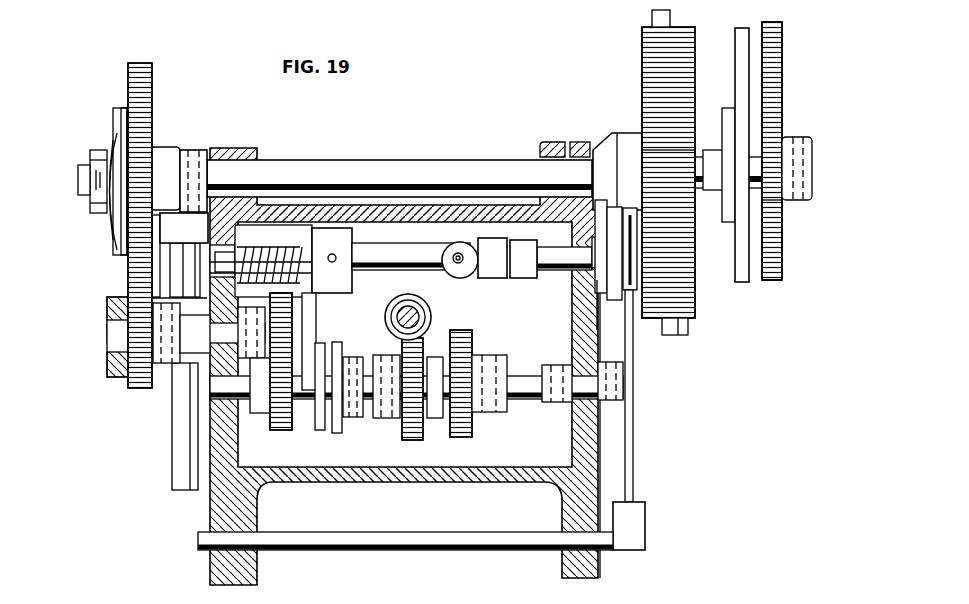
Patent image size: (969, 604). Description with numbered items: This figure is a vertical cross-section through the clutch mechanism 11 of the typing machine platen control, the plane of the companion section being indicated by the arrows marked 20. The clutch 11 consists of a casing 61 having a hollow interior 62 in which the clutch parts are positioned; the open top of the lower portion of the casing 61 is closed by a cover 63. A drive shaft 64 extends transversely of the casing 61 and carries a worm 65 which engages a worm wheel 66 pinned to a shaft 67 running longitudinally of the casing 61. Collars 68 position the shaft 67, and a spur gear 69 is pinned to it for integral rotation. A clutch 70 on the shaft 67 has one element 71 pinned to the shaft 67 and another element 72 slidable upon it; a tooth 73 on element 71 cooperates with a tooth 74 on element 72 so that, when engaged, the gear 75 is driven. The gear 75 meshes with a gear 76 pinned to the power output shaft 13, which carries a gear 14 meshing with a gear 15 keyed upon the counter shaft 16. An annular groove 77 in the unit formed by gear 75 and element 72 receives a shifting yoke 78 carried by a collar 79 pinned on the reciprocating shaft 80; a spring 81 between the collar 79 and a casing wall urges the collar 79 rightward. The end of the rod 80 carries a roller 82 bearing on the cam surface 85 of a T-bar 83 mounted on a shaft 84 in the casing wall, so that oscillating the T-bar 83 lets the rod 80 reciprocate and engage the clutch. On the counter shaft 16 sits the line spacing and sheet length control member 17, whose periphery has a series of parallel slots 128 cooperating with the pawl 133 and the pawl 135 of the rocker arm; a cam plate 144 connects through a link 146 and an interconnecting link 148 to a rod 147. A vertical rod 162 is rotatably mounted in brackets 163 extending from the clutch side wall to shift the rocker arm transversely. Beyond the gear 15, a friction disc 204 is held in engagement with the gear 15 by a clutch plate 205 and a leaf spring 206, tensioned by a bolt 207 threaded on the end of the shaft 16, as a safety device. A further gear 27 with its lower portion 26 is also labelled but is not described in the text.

The friction disc 204 is at (124, 108).
The clutch plate 205 is at (115, 112).
The leaf spring 206 is at (110, 137).
The bolt 207 is at (100, 213).
The gear 15 is at (140, 122).
The counter shaft 16 is at (342, 168).
The cover 63 is at (413, 203).
The clutch mechanism 11 is at (478, 202).
The brackets 163 is at (194, 232).
The rod 162 is at (175, 433).
The gear 14 is at (135, 383).
The power output shaft 13 is at (217, 333).
The disc 20 is at (735, 80).
The spring 81 is at (283, 247).
The collar 79 is at (350, 237).
The shaft 80 is at (412, 252).
The roller 82 is at (458, 240).
The T-bar 83 is at (485, 245).
The cam surface 85 is at (481, 279).
The shaft 84 is at (555, 263).
The gear 76 is at (282, 305).
The shifting yoke 78 is at (310, 325).
The worm 65 is at (392, 300).
The drive shaft 64 is at (420, 315).
The tooth 73 is at (327, 387).
The gear 75 is at (277, 427).
The annular groove 77 is at (307, 403).
The tooth 74 is at (310, 392).
The clutch element 72 is at (315, 417).
The clutch 70 is at (318, 433).
The clutch element 71 is at (340, 437).
The worm wheel 66 is at (418, 437).
The hollow interior 62 is at (437, 452).
The rod 147 is at (490, 542).
The spur gear 69 is at (470, 343).
The collars 68 is at (600, 364).
The shaft 67 is at (527, 373).
The casing 61 is at (600, 437).
The interconnecting link 148 is at (628, 475).
The link 146 is at (638, 522).
The cam plate 144 is at (608, 297).
The pawl 133 is at (648, 15).
The line spacing and sheet length control member 17 is at (683, 27).
The gear 27 is at (780, 42).
The gear 26 is at (783, 250).
The slots 128 is at (695, 293).
The pawl 135 is at (688, 332).